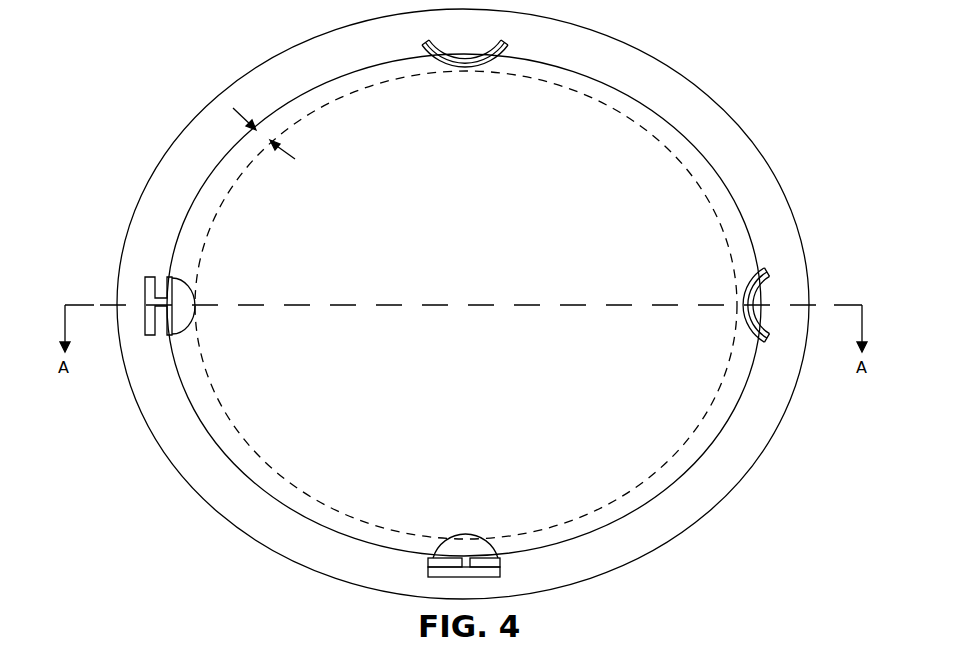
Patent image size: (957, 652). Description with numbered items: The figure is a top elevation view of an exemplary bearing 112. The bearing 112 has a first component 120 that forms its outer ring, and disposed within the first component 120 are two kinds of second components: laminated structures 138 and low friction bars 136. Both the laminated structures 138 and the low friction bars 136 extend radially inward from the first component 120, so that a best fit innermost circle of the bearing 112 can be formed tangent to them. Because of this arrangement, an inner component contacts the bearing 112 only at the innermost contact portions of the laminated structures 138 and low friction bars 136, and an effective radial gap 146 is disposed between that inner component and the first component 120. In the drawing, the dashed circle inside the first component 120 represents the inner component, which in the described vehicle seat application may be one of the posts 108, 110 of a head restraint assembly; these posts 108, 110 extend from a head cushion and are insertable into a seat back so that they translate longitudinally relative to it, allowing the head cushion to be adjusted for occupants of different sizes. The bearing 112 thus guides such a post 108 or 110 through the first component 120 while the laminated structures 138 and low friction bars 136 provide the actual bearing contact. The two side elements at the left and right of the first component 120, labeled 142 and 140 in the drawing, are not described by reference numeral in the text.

The post 108 is at (466, 305).
The post 110 is at (657, 468).
The bearing 112 is at (729, 75).
The first component 120 is at (744, 480).
The low friction bar 136 is at (466, 532).
The laminated structure 138 is at (463, 72).
The side clip 140 is at (756, 305).
The side clip 142 is at (170, 306).
The effective radial gap 146 is at (297, 154).